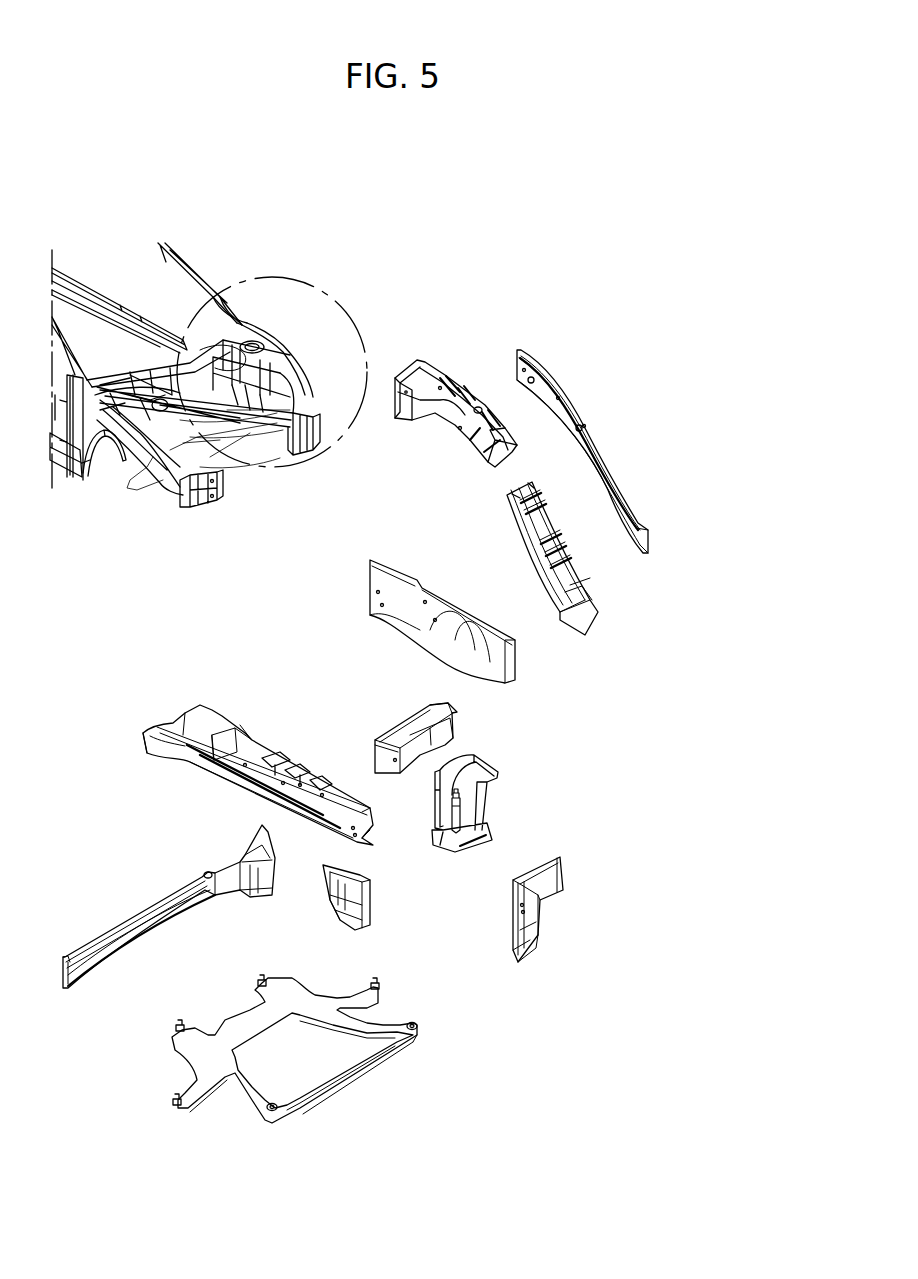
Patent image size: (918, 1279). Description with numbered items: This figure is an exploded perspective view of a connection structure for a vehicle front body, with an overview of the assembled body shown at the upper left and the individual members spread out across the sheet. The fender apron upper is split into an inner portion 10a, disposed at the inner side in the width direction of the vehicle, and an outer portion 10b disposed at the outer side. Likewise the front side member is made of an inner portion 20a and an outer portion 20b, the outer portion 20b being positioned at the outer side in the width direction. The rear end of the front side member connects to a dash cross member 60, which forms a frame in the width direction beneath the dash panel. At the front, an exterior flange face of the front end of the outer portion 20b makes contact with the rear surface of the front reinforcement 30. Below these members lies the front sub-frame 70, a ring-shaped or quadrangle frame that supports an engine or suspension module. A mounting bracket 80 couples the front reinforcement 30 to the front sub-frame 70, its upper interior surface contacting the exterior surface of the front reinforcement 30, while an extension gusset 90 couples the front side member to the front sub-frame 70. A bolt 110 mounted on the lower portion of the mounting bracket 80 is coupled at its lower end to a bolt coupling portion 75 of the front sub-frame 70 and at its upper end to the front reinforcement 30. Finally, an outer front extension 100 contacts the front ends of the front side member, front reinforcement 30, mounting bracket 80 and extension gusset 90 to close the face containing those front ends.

The inner portion of the fender apron upper 10a is at (452, 400).
The outer portion of the fender apron upper 10b is at (592, 420).
The inner portion of the front side member 20a is at (210, 717).
The outer portion of the front side member 20b is at (403, 605).
The front reinforcement 30 is at (398, 733).
The dash cross member 60 is at (162, 917).
The front sub-frame 70 is at (182, 1042).
The bolt coupling portion 75 is at (417, 1035).
The mounting bracket 80 is at (475, 773).
The extension gusset 90 is at (337, 887).
The outer front extension 100 is at (517, 920).
The bolt 110 is at (462, 807).